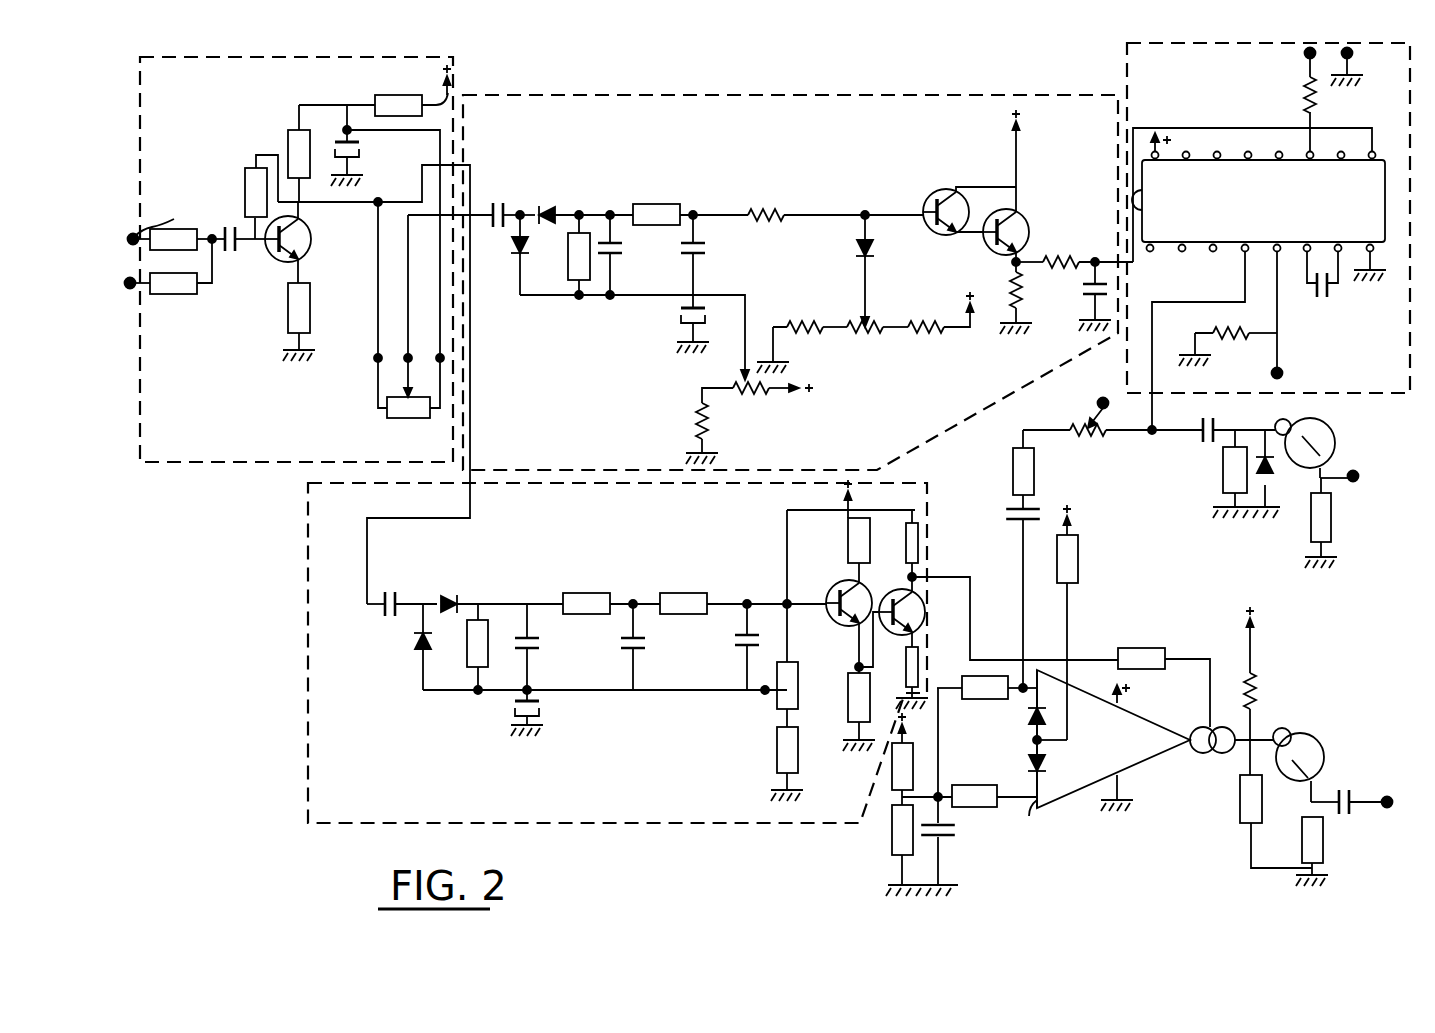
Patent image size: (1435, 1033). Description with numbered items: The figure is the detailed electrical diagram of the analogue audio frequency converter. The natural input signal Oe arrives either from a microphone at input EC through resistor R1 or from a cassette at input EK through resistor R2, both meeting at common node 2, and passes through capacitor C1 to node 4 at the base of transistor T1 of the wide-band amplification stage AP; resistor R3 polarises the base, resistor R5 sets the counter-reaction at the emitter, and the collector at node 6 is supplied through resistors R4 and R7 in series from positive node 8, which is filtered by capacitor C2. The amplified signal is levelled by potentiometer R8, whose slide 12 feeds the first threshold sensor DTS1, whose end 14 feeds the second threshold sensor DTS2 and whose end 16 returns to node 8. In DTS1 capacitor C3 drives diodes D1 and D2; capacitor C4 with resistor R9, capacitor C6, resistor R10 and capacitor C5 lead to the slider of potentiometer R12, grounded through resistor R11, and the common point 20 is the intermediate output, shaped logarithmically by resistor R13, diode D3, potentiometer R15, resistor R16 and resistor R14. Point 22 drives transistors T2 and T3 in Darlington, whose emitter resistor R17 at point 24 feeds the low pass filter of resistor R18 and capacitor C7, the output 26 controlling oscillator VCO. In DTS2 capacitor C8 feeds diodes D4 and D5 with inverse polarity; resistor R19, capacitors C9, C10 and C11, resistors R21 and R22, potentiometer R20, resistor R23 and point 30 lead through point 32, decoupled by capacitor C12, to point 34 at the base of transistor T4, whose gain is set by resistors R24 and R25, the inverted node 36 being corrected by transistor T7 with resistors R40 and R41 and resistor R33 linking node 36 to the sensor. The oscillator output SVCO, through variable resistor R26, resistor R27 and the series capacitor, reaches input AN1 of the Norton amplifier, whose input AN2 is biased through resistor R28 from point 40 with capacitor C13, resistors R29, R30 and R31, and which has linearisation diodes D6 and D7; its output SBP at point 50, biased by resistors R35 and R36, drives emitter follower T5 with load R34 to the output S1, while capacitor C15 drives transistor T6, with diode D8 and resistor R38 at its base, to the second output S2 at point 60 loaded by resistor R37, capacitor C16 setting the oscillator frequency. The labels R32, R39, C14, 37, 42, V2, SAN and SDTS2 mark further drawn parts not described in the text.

The amplification stage AP is at (198, 462).
The first threshold sensor DTS1 is at (762, 95).
The second threshold sensor DTS2 is at (308, 590).
The oscillator VCO is at (1127, 75).
The microphone input EC is at (136, 239).
The cassette input EK is at (132, 288).
The natural input signal Oe is at (169, 217).
The resistor R1 is at (187, 239).
The resistor R2 is at (181, 266).
The resistor R3 is at (261, 186).
The resistor R4 is at (302, 153).
The resistor R5 is at (300, 322).
The resistor R7 is at (413, 90).
The potentiometer R8 is at (408, 407).
The resistor R9 is at (582, 255).
The resistor R10 is at (634, 292).
The resistor R11 is at (687, 433).
The potentiometer R12 is at (757, 400).
The resistor R13 is at (834, 193).
The resistor R14 is at (802, 333).
The potentiometer R15 is at (879, 313).
The resistor R16 is at (939, 312).
The resistor R17 is at (1033, 303).
The resistor R18 is at (1074, 247).
The resistor R19 is at (605, 649).
The potentiometer R20 is at (791, 618).
The resistor R21 is at (611, 603).
The resistor R22 is at (743, 603).
The resistor R23 is at (788, 764).
The resistor R24 is at (851, 531).
The resistor R25 is at (860, 709).
The variable resistor R26 is at (1113, 435).
The resistor R27 is at (1027, 469).
The resistor R28 is at (994, 796).
The resistor R29 is at (922, 850).
The resistor R30 is at (906, 759).
The resistor R31 is at (987, 687).
The resistor R32 is at (1071, 622).
The resistor R33 is at (1164, 687).
The resistor R34 is at (1313, 851).
The resistor R35 is at (1276, 821).
The resistor R36 is at (1271, 691).
The resistor R37 is at (1322, 523).
The resistor R38 is at (1228, 334).
The resistor R39 is at (1312, 100).
The resistor R40 is at (912, 678).
The resistor R41 is at (914, 550).
The capacitor C1 is at (239, 223).
The capacitor C2 is at (362, 148).
The capacitor C3 is at (507, 204).
The capacitor C4 is at (621, 255).
The capacitor C5 is at (704, 261).
The capacitor C6 is at (678, 330).
The capacitor C7 is at (1083, 296).
The capacitor C8 is at (402, 588).
The capacitor C9 is at (545, 647).
The capacitor C10 is at (659, 647).
The capacitor C11 is at (731, 647).
The capacitor C12 is at (1006, 594).
The capacitor C13 is at (962, 786).
The capacitor C14 is at (1346, 786).
The capacitor C15 is at (1220, 420).
The capacitor C16 is at (1329, 291).
The diode D1 is at (585, 197).
The diode D2 is at (508, 253).
The diode D3 is at (883, 271).
The diode D4 is at (498, 588).
The diode D5 is at (409, 647).
The linearisation diode D6 is at (1019, 774).
The linearisation diode D7 is at (1024, 705).
The diode D8 is at (1278, 468).
The transistor T1 is at (306, 258).
The transistor T2 is at (930, 197).
The transistor T3 is at (1022, 214).
The transistor T4 is at (838, 628).
The emitter follower transistor T5 is at (1322, 750).
The transistor T6 is at (1330, 427).
The transistor T7 is at (924, 628).
The common node 2 is at (213, 246).
The node 4 is at (255, 242).
The common node 6 is at (299, 205).
The node 8 is at (349, 107).
The slide of potentiometer 12 is at (408, 356).
The end of potentiometer 14 is at (378, 352).
The end of potentiometer 16 is at (440, 354).
The intermediate output 20 is at (693, 215).
The common point 22 is at (865, 215).
The common point 24 is at (1015, 262).
The output of threshold sensor 26 is at (1094, 262).
The common point 30 is at (645, 583).
The common point 32 is at (529, 690).
The common point 34 is at (760, 583).
The node 36 is at (856, 667).
The circuit node 37 is at (923, 575).
The common point 40 is at (936, 796).
The circuit node 42 is at (1032, 742).
The common point 50 is at (1278, 730).
The common point 60 is at (1325, 475).
The output of oscillator SVCO is at (1152, 416).
The supply voltage V2 is at (1293, 319).
The output of modulator S1 is at (1394, 790).
The second output S2 is at (1366, 487).
The input of operational amplifier AN1 is at (1041, 670).
The second input of amplifier AN2 is at (1041, 831).
The comparator output signal SAN is at (1212, 754).
The output of NORTON amplifier SBP is at (1229, 755).
The second tone detector output SDTS2 is at (1204, 728).